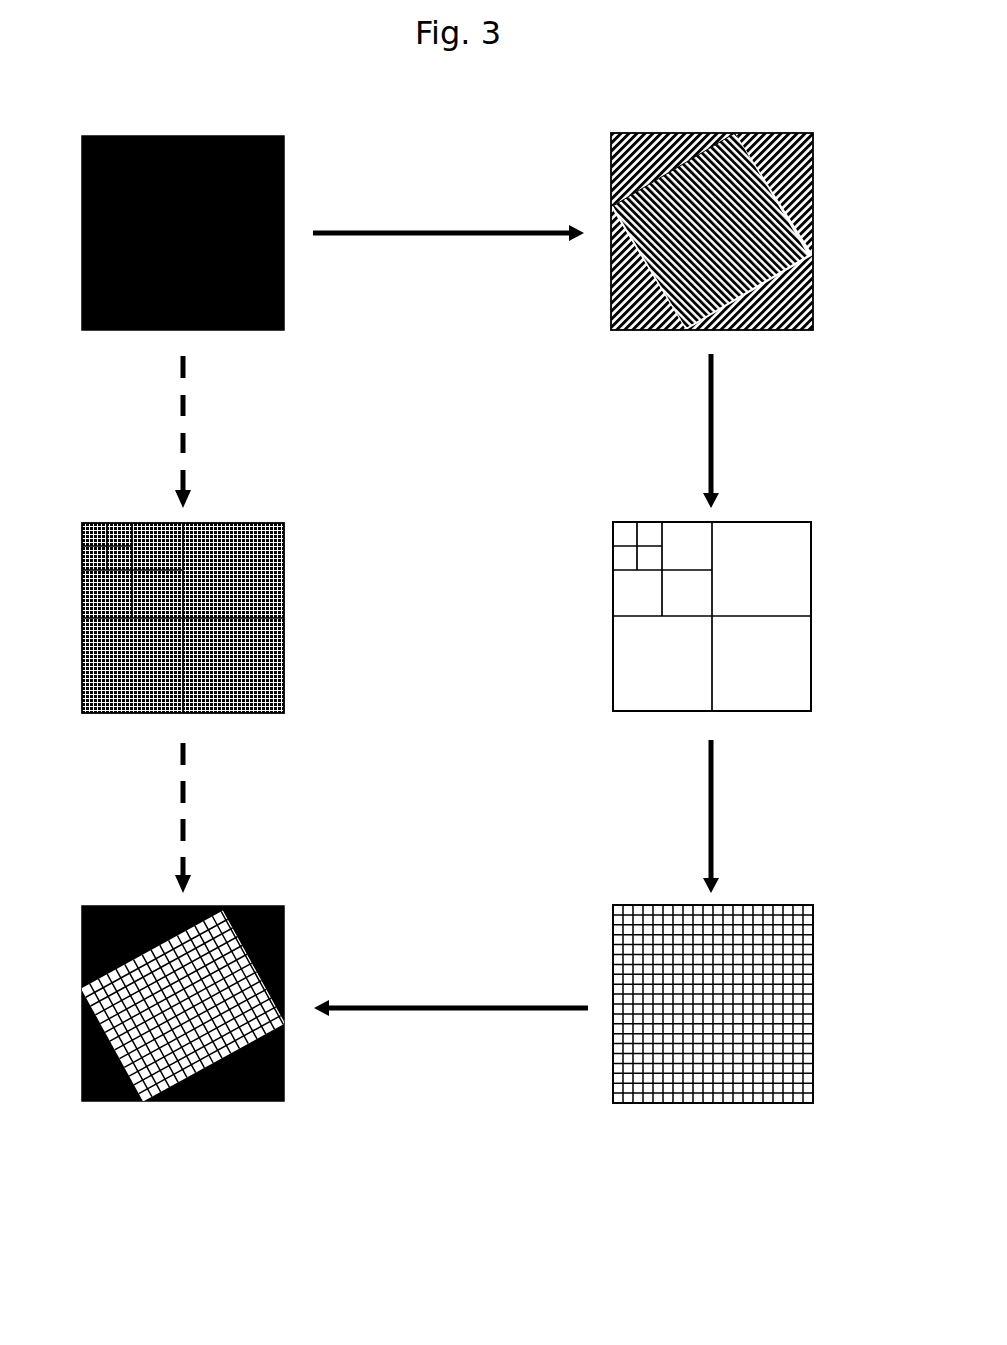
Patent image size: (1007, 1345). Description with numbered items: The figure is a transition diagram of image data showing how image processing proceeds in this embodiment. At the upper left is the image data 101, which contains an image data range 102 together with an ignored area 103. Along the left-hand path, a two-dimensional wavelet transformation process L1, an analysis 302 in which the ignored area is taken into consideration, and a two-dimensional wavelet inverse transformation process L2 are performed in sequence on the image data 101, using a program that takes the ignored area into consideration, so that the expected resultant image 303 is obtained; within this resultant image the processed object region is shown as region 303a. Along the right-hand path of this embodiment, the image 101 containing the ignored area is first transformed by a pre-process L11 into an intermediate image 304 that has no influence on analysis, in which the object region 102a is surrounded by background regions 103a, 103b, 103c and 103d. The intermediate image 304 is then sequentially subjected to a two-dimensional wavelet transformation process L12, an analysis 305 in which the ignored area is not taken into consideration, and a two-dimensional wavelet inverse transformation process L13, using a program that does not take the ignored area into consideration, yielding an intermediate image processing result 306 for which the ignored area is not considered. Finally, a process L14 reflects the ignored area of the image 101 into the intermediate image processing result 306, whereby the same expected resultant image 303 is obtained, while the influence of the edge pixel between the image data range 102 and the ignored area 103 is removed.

The image data 101 is at (250, 128).
The image data range 102 is at (150, 290).
The ignored area 103 is at (262, 283).
The object region in processed image 102a is at (760, 197).
The background region (upper left) 103a is at (625, 143).
The background region (lower left) 103b is at (620, 288).
The background region (lower right) 103c is at (763, 310).
The background region (upper right) 103d is at (782, 138).
The intermediate image 304 is at (624, 322).
The analysis in which the ignored area is taken into consideration 302 is at (255, 706).
The analysis in which the ignored area is not taken into consideration 305 is at (624, 703).
The expected resultant image 303 is at (258, 1094).
The grid-divided object region 303a is at (228, 965).
The intermediate image processing result 306 is at (624, 1094).
The two-dimensional wavelet transformation process L1 is at (182, 414).
The two-dimensional wavelet inverse transformation process L2 is at (182, 818).
The pre-process L11 is at (444, 222).
The two-dimensional wavelet transformation process L12 is at (705, 412).
The two-dimensional wavelet inverse transformation process L13 is at (705, 811).
The process of reflecting the ignored area L14 is at (448, 997).